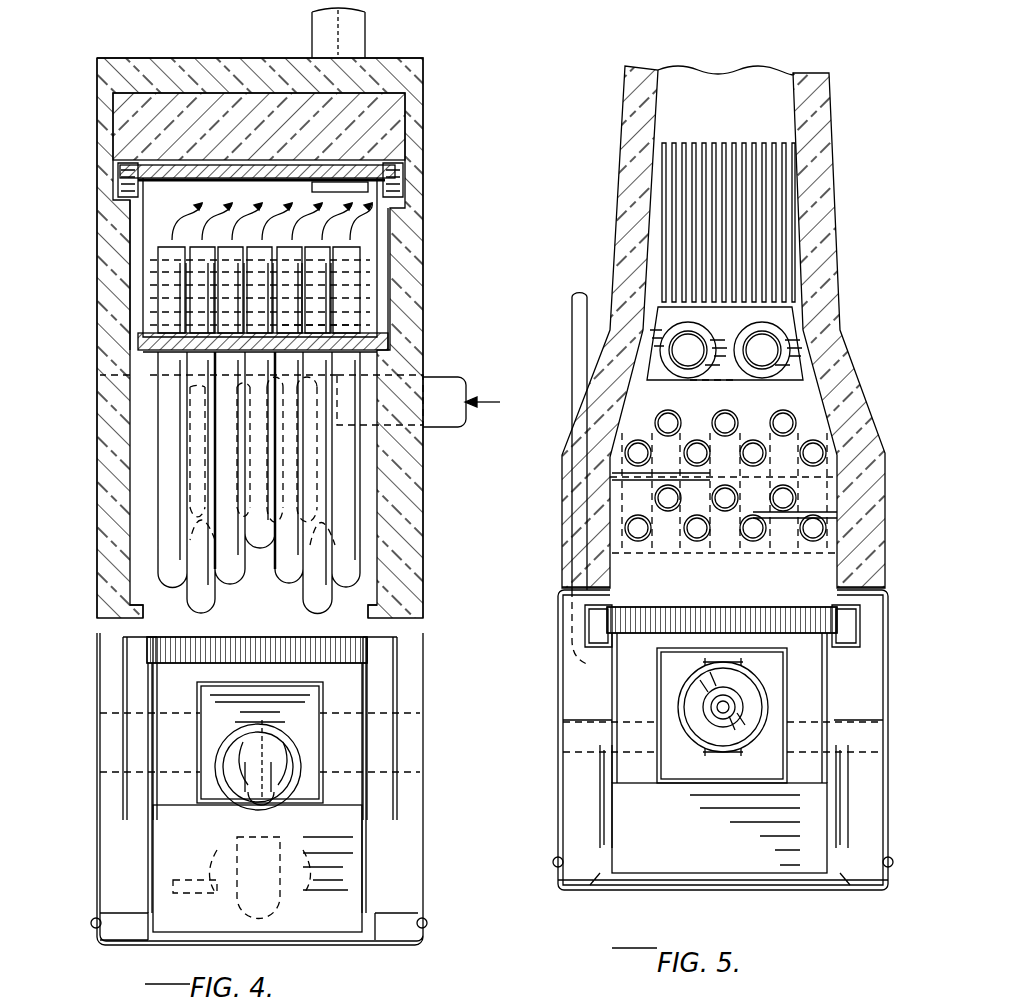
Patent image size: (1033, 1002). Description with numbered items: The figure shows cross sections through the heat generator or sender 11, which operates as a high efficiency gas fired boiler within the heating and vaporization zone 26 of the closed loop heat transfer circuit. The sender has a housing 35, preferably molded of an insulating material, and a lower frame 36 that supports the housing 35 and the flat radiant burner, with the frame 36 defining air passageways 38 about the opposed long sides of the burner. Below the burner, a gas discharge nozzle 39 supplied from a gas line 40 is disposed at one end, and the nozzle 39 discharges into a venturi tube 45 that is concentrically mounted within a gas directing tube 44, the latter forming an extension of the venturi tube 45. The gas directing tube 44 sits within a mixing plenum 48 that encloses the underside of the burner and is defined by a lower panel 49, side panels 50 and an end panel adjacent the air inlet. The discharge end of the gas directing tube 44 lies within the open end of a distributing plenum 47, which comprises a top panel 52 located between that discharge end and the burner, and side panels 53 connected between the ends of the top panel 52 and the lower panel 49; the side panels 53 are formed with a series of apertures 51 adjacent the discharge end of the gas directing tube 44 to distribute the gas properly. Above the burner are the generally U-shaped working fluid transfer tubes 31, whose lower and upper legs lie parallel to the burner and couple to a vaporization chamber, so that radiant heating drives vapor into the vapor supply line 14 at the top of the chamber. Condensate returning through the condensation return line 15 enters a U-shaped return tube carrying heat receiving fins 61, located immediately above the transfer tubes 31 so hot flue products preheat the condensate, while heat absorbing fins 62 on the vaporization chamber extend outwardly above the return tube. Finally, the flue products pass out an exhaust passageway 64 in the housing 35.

In FIG. 4, the heat generator or sender 11 is at (427, 127).
In FIG. 5, the heat generator or sender 11 is at (835, 103).
In FIG. 4, the vapor supply line 14 is at (320, 37).
In FIG. 4, the condensation return line 15 is at (440, 428).
In FIG. 4, the heating and vaporization zone 26 is at (147, 288).
In FIG. 4, the working fluid transfer tubes 31 is at (300, 606).
In FIG. 5, the working fluid transfer tubes 31 is at (820, 485).
In FIG. 4, the housing 35 is at (392, 260).
In FIG. 5, the housing 35 is at (820, 220).
In FIG. 4, the lower frame 36 is at (330, 690).
In FIG. 5, the lower frame 36 is at (888, 700).
In FIG. 4, the air passageways 38 is at (123, 640).
In FIG. 5, the air passageways 38 is at (590, 606).
In FIG. 5, the gas discharge nozzle 39 is at (740, 697).
In FIG. 5, the gas line 40 is at (572, 320).
In FIG. 4, the gas directing tube 44 is at (290, 795).
In FIG. 5, the gas directing tube 44 is at (730, 727).
In FIG. 4, the venturi tube 45 is at (300, 757).
In FIG. 5, the venturi tube 45 is at (715, 735).
In FIG. 4, the distributing plenum 47 is at (330, 697).
In FIG. 5, the distributing plenum 47 is at (652, 648).
In FIG. 4, the mixing plenum 48 is at (160, 748).
In FIG. 5, the mixing plenum 48 is at (840, 746).
In FIG. 4, the lower panel 49 is at (240, 815).
In FIG. 5, the lower panel 49 is at (725, 792).
In FIG. 5, the side panels 50 is at (605, 750).
In FIG. 4, the apertures 51 is at (190, 730).
In FIG. 5, the apertures 51 is at (657, 692).
In FIG. 4, the top panel 52 is at (290, 680).
In FIG. 5, the top panel 52 is at (740, 645).
In FIG. 4, the side panels 53 is at (200, 775).
In FIG. 5, the side panels 53 is at (620, 792).
In FIG. 5, the heat receiving fins 61 is at (750, 378).
In FIG. 5, the heat absorbing fins 62 is at (770, 182).
In FIG. 5, the exhaust passageway 64 is at (680, 85).